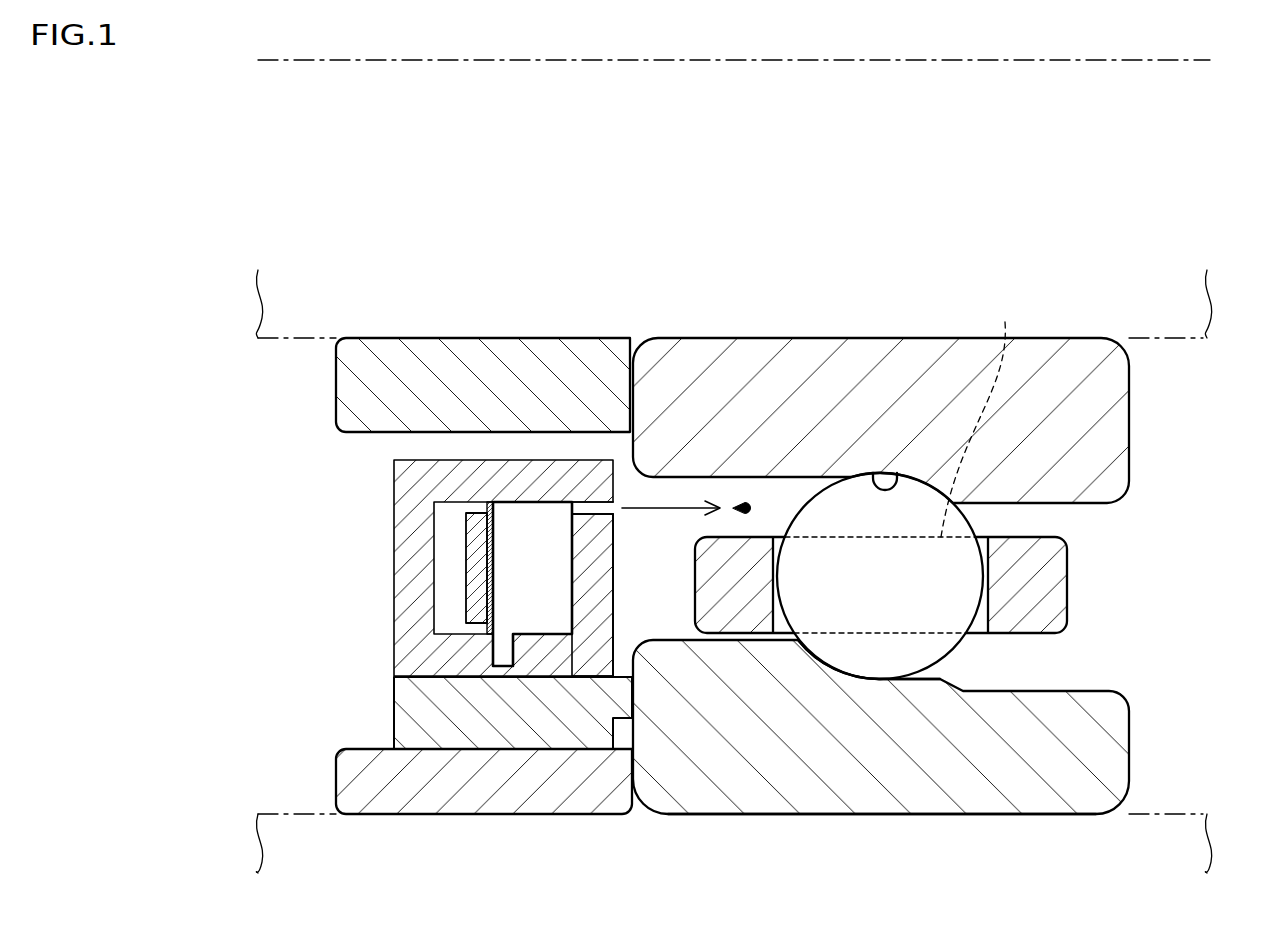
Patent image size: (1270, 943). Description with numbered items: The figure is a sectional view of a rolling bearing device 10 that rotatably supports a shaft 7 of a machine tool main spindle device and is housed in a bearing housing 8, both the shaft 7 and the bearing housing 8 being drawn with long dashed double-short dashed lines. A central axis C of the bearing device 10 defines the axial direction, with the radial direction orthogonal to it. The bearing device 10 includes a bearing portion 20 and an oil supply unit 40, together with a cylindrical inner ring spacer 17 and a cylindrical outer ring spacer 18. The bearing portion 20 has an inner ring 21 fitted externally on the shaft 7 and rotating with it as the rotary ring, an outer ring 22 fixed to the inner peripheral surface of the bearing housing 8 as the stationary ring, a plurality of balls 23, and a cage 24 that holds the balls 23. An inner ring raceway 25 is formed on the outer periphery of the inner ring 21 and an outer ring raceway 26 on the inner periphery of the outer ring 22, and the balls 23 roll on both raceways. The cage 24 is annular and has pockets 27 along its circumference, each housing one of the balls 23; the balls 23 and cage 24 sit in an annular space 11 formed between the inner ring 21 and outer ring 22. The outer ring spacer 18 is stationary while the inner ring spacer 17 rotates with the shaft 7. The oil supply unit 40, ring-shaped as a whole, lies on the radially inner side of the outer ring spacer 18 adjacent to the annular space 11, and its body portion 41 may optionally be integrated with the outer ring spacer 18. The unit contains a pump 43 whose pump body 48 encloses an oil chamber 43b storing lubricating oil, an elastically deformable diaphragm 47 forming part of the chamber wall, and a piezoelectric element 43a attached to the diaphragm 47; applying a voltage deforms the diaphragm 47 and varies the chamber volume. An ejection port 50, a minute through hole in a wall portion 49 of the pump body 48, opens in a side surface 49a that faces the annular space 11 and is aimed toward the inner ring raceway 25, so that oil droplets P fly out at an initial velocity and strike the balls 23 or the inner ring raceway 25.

The central axis C is at (362, 63).
The oil droplets P is at (745, 506).
The shaft 7 is at (288, 340).
The bearing housing 8 is at (288, 814).
The rolling bearing device 10 is at (945, 606).
The annular space 11 is at (918, 630).
The inner ring spacer 17 is at (389, 358).
The outer ring spacer 18 is at (392, 790).
The bearing portion 20 is at (1043, 815).
The inner ring 21 is at (1112, 424).
The outer ring 22 is at (1112, 768).
The balls 23 is at (861, 655).
The cage 24 is at (1068, 566).
The inner ring raceway 25 is at (882, 478).
The outer ring raceway 26 is at (835, 663).
The pockets 27 is at (940, 538).
The oil supply unit 40 is at (460, 588).
The body portion 41 is at (405, 712).
The pump 43 is at (482, 484).
The piezoelectric element 43a is at (466, 556).
The oil chamber 43b is at (554, 581).
The diaphragm 47 is at (487, 600).
The pump body 48 is at (394, 500).
The wall portion 49 is at (600, 536).
The side surface 49a is at (613, 560).
The ejection port 50 is at (592, 512).